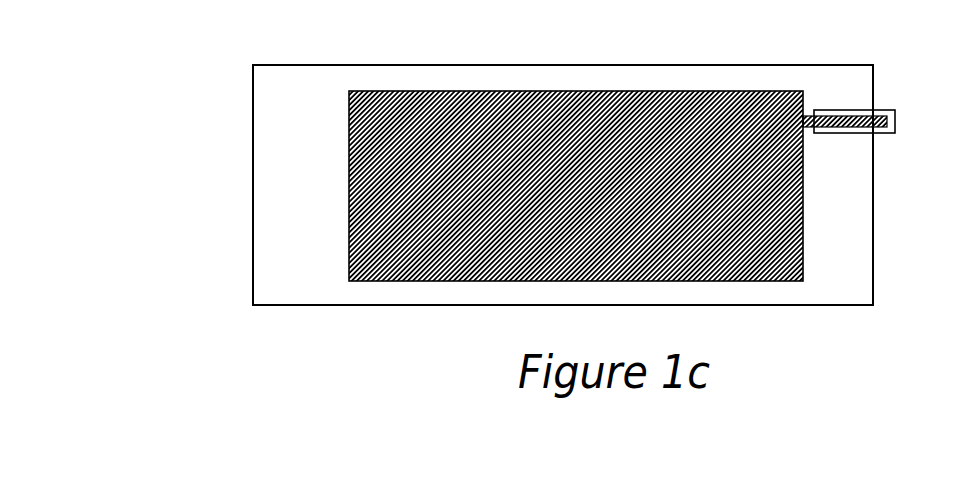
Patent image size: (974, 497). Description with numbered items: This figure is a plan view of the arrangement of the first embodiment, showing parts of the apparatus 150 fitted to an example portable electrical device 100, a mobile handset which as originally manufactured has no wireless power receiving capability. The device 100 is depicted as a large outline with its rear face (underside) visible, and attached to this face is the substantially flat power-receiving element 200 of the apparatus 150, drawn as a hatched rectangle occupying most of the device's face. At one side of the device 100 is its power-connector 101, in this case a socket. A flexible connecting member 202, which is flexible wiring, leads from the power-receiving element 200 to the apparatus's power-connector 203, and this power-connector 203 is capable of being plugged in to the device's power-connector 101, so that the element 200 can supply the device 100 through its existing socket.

The portable electrical device 100 is at (253, 179).
The power-receiving element 200 is at (443, 91).
The apparatus 150 is at (412, 282).
The power-connector 101 is at (845, 108).
The flexible connecting member 202 is at (860, 128).
The power-connector 203 is at (895, 115).